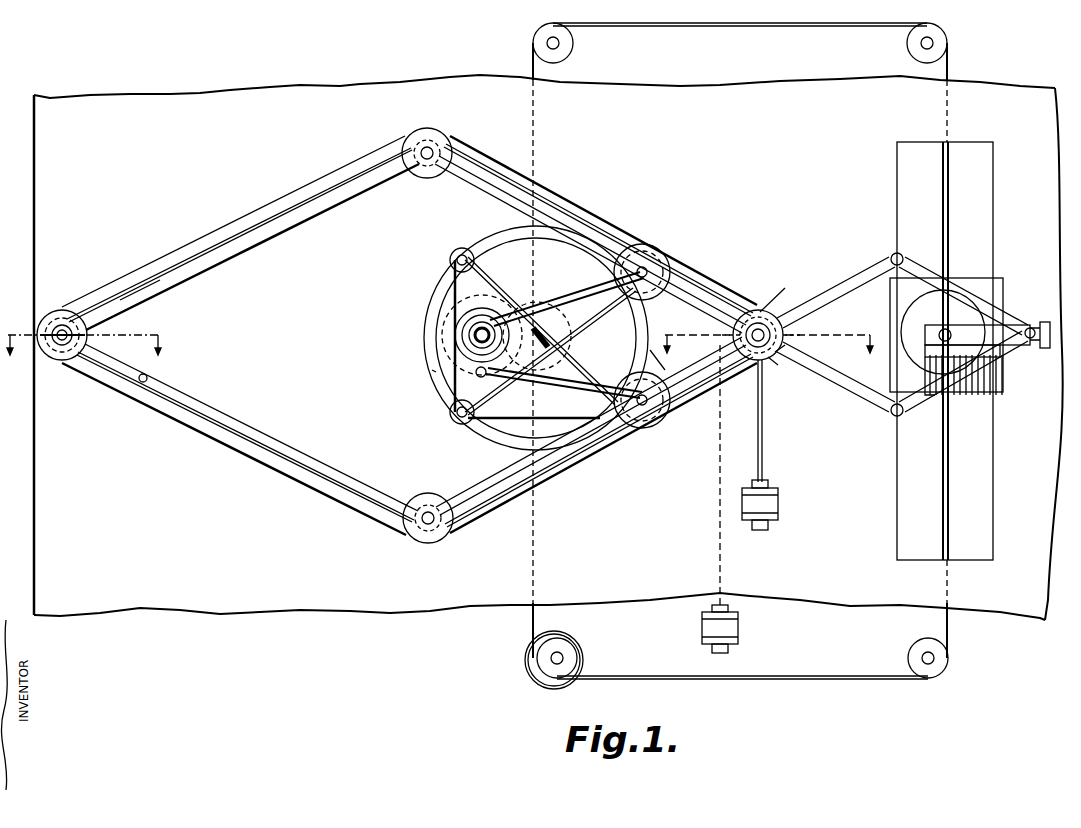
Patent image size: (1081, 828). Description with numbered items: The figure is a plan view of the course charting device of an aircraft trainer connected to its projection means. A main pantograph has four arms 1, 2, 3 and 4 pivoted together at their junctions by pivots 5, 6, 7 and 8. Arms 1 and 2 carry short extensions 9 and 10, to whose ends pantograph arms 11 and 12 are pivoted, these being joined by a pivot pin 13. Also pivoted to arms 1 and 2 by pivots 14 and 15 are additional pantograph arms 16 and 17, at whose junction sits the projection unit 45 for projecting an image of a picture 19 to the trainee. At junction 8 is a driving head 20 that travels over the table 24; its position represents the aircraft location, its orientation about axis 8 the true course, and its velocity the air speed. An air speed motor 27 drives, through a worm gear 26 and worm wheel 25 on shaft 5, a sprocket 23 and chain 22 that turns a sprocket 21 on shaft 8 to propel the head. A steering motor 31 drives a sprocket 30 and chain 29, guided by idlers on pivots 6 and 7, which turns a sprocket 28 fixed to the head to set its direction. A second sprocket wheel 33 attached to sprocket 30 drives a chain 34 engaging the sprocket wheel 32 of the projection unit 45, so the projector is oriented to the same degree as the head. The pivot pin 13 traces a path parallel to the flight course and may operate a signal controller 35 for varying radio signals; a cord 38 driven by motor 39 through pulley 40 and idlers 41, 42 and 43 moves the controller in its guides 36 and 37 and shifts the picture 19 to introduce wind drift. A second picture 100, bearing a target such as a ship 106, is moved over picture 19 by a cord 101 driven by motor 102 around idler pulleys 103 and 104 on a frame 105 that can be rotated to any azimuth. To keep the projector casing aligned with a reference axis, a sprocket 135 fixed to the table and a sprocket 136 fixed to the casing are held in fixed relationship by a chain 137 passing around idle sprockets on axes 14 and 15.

The pantograph arm 1 is at (470, 185).
The pantograph arm 2 is at (470, 490).
The pantograph arm 3 is at (345, 205).
The pantograph arm 4 is at (325, 455).
The pivot 5 is at (783, 302).
The pivot 6 is at (428, 545).
The pivot 7 is at (430, 142).
The pivot 8 is at (128, 335).
The short extension 9 is at (848, 283).
The short extension 10 is at (845, 385).
The pantograph arm 11 is at (903, 257).
The pantograph arm 12 is at (900, 416).
The pivot pin 13 is at (1030, 328).
The pivot 14 is at (652, 298).
The pivot 15 is at (665, 368).
The pantograph arm 16 is at (583, 290).
The pantograph arm 17 is at (630, 380).
The picture 19 is at (530, 240).
The driving head 20 is at (78, 380).
The sprocket 21 is at (55, 360).
The chain 22 is at (185, 232).
The sprocket 23 is at (782, 367).
The table 24 is at (235, 612).
The worm wheel 25 is at (795, 347).
The worm gear 26 is at (712, 335).
The air speed motor 27 is at (740, 628).
The sprocket 28 is at (52, 312).
The chain 29 is at (283, 192).
The sprocket 30 is at (800, 335).
The steering motor 31 is at (780, 500).
The sprocket wheel 32 is at (440, 345).
The second sprocket wheel 33 is at (764, 378).
The chain 34 is at (724, 400).
The signal controller 35 is at (1003, 290).
The guide 36 is at (897, 492).
The guide 37 is at (990, 492).
The cord 38 is at (680, 26).
The motor 39 is at (578, 638).
The pulley 40 is at (578, 658).
The idler 41 is at (575, 46).
The idler 42 is at (905, 45).
The idler 43 is at (950, 658).
The projection unit 45 is at (424, 330).
The second picture 100 is at (570, 338).
The cord 101 is at (440, 283).
The motor 102 is at (450, 414).
The idler pulley 103 is at (455, 262).
The idler pulley 104 is at (600, 406).
The frame 105 is at (432, 370).
The ship 106 is at (552, 345).
The sprocket 135 is at (762, 312).
The sprocket 136 is at (445, 398).
The chain 137 is at (530, 397).